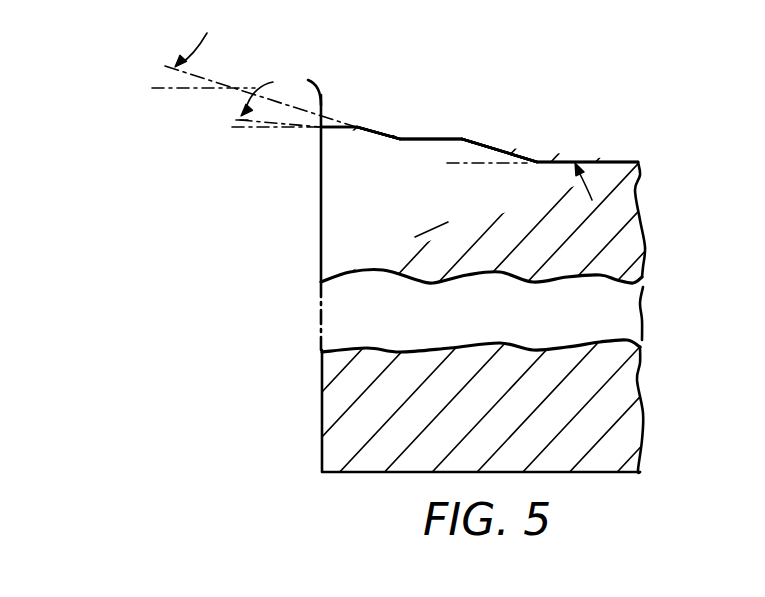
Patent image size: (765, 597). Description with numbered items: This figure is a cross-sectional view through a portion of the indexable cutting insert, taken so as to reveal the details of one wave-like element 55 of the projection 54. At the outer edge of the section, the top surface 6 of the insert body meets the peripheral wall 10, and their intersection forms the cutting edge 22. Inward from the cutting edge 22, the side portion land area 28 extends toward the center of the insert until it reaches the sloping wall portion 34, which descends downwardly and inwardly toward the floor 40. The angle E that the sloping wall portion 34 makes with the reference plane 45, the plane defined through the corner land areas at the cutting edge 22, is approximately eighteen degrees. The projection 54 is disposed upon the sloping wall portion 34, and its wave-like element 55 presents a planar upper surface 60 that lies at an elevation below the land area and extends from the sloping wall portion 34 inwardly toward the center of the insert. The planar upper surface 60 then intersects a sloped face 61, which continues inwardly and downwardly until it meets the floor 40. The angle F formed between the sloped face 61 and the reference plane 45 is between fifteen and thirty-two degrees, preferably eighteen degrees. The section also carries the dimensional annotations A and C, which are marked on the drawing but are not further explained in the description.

The top surface 6 is at (368, 82).
The peripheral wall 10 is at (307, 232).
The cutting edge 22 is at (302, 84).
The side portion land area 28 is at (356, 126).
The sloping wall portion 34 is at (388, 124).
The floor 40 is at (600, 161).
The reference plane 45 is at (167, 89).
The projection 54 is at (427, 139).
The wave-like element 55 is at (410, 139).
The planar upper surface 60 is at (448, 139).
The sloped face 61 is at (509, 143).
The angle A is at (244, 140).
The dimension C is at (578, 152).
The angle E is at (180, 98).
The angle F is at (488, 175).